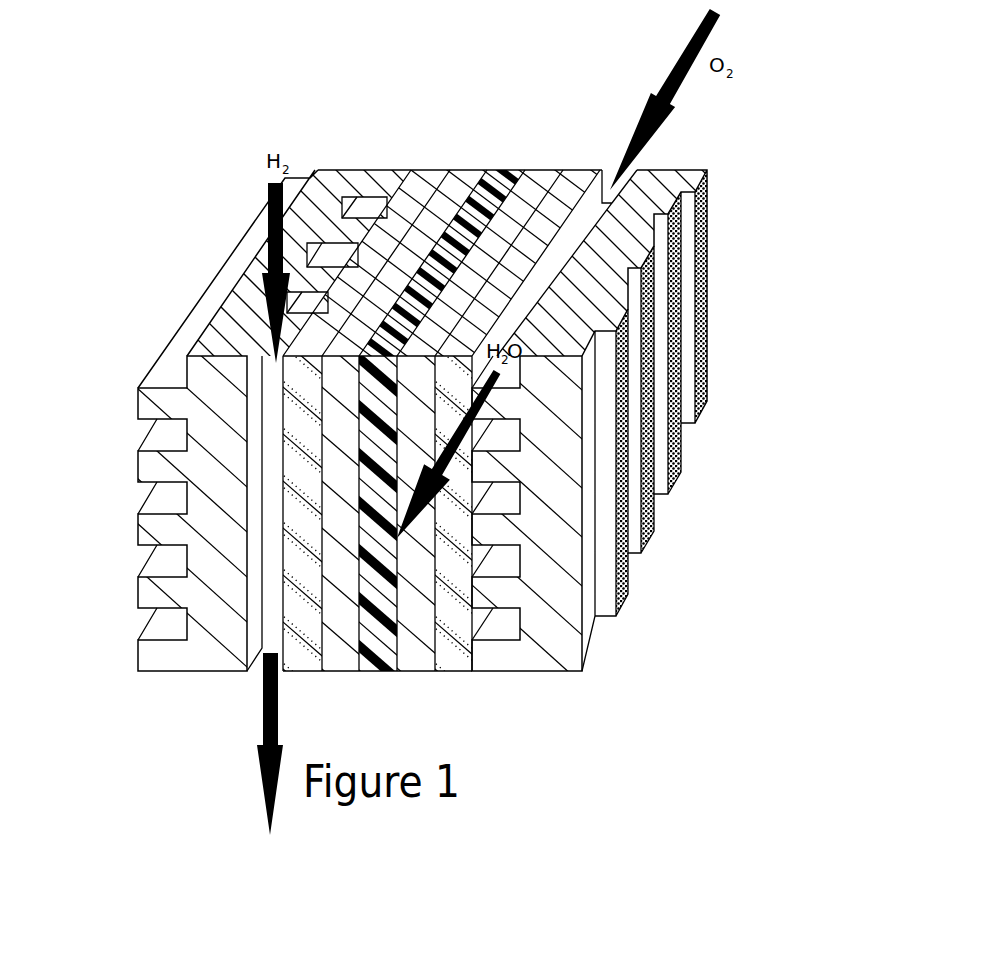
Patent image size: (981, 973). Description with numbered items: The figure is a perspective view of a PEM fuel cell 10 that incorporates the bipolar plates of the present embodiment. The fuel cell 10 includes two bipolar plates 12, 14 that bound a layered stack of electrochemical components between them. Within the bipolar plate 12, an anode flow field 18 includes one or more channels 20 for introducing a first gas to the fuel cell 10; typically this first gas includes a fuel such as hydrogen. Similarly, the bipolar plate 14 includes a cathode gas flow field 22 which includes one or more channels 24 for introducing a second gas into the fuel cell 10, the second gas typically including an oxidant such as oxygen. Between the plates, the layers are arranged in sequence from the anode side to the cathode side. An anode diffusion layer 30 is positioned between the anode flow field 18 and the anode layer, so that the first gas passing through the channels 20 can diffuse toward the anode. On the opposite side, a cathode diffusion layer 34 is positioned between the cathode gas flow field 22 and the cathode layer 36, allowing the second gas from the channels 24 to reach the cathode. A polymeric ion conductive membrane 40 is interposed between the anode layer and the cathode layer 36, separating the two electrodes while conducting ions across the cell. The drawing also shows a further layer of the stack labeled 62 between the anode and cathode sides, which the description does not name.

The PEM fuel cell 10 is at (235, 132).
The bipolar plate 12 is at (220, 267).
The bipolar plate 14 is at (703, 293).
The anode flow field 18 is at (330, 188).
The channels 20 is at (380, 170).
The cathode gas flow field 22 is at (653, 185).
The channels 24 is at (495, 623).
The anode diffusion layer 30 is at (435, 170).
The polymeric ion conductive membrane 40 is at (475, 170).
The electrolyte membrane 62 is at (507, 173).
The cathode layer 36 is at (537, 172).
The cathode diffusion layer 34 is at (580, 177).